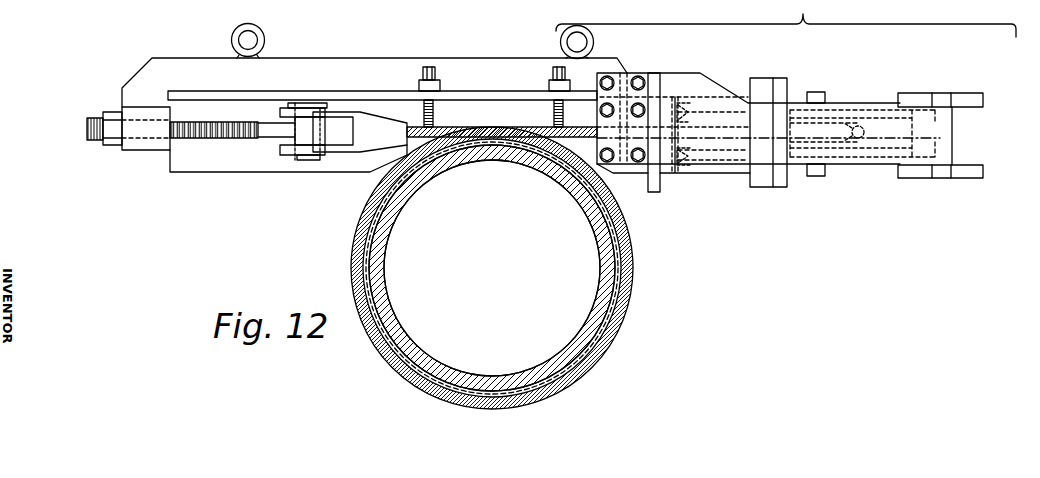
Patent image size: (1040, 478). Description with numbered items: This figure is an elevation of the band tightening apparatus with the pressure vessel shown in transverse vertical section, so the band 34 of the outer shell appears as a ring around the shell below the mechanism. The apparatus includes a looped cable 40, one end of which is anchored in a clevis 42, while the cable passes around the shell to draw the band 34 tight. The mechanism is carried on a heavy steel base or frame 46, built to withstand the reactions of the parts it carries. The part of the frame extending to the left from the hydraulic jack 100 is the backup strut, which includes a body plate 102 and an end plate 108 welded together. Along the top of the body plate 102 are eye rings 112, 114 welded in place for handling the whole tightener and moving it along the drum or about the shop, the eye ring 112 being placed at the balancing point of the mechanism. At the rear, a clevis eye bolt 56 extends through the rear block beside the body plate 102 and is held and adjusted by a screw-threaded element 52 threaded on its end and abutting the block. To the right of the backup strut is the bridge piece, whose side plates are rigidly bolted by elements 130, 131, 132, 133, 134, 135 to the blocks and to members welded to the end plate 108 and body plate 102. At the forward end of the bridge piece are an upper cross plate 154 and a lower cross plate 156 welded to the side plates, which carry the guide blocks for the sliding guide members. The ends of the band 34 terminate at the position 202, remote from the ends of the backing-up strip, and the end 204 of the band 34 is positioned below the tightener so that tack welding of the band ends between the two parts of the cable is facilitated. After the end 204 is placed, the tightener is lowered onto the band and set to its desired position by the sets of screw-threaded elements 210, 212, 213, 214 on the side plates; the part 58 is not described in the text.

The band 34 is at (583, 365).
The looped cable 40 is at (637, 272).
The clevis 42 is at (356, 112).
The base or frame 46 is at (786, 18).
The screw-threaded element 52 is at (107, 147).
The clevis eye bolt 56 is at (218, 140).
The coupling bracket 58 is at (308, 137).
The hydraulic jack 100 is at (737, 187).
The body plate 102 is at (473, 68).
The end plate 108 is at (657, 178).
The eye ring 112 is at (596, 43).
The eye ring 114 is at (238, 29).
The bolting element 130 is at (622, 74).
The bolting element 131 is at (645, 76).
The bolting element 132 is at (600, 111).
The bolting element 133 is at (644, 109).
The bolting element 134 is at (562, 180).
The bolting element 135 is at (637, 164).
The upper cross plate 154 is at (965, 94).
The lower cross plate 156 is at (962, 178).
The position of band ends 202 is at (393, 181).
The end of band 204 is at (405, 175).
The screw-threaded element 210 is at (430, 66).
The screw-threaded element 212 is at (421, 86).
The screw-threaded element 213 is at (558, 66).
The screw-threaded element 214 is at (551, 86).